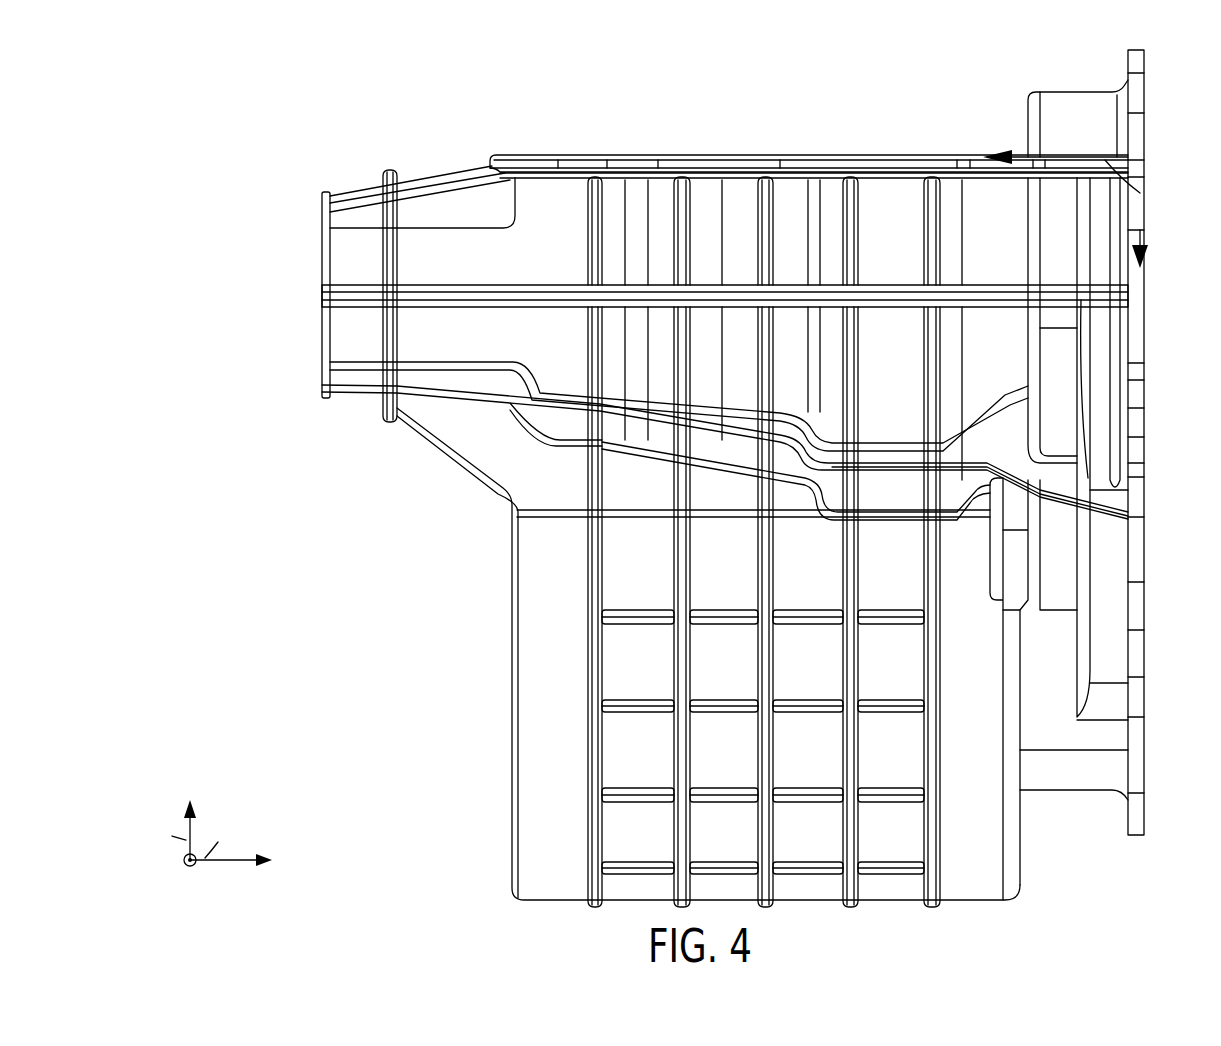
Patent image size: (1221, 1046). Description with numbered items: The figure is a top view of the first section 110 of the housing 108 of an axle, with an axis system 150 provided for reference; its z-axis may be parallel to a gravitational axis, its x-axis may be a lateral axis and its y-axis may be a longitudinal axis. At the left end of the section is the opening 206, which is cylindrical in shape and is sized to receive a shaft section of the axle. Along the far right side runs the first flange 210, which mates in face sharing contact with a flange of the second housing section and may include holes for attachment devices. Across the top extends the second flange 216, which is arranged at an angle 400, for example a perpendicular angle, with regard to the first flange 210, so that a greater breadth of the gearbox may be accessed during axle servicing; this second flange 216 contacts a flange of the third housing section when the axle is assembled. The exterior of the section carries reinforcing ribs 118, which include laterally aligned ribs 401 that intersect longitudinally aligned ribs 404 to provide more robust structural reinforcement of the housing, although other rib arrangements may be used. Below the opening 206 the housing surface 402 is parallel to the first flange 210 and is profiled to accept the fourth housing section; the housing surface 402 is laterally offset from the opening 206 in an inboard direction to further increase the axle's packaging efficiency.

The housing 108 is at (150, 118).
The first housing section 110 is at (533, 118).
The reinforcing ribs 118 is at (593, 176).
The axis system 150 is at (268, 819).
The opening 206 is at (265, 255).
The first flange 210 is at (1147, 307).
The second flange 216 is at (925, 153).
The angle 400 is at (1118, 186).
The laterally aligned ribs 401 is at (330, 299).
The housing surface 402 is at (508, 592).
The longitudinally aligned ribs 404 is at (386, 212).